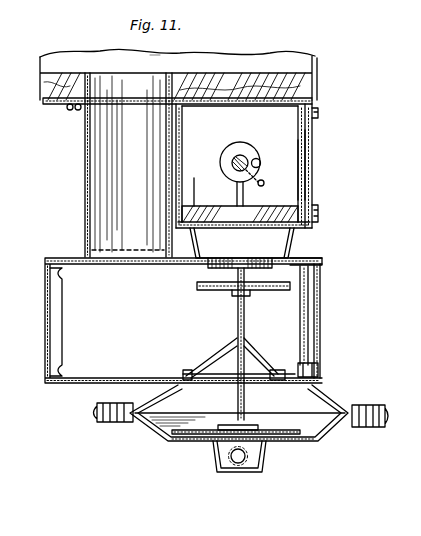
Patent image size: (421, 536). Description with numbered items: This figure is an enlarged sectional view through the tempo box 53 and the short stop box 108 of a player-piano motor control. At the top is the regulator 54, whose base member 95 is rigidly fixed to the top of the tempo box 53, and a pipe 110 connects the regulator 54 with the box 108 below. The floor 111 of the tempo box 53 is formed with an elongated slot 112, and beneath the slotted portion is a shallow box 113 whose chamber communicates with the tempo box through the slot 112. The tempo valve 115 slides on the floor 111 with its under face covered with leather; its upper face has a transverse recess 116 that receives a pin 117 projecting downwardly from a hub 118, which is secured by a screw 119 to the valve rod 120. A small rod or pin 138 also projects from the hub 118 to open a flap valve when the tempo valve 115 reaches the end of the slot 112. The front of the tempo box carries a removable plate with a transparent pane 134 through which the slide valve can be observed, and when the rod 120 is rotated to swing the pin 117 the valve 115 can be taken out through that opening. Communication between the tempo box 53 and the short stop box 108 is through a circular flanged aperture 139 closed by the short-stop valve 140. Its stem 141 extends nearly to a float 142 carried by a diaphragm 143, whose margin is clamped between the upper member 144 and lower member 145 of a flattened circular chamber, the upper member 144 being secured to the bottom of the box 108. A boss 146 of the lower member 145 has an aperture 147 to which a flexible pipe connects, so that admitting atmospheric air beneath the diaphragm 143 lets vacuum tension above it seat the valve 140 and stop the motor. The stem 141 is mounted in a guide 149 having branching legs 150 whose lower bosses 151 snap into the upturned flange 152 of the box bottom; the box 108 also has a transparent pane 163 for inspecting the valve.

The regulator 54 is at (277, 58).
The base member 95 is at (318, 70).
The tempo box 53 is at (313, 127).
The pipe 110 is at (86, 184).
The hub 118 is at (236, 149).
The valve rod 120 is at (247, 159).
The small rod or pin 138 is at (261, 164).
The tempo valve 115 is at (194, 206).
The transverse recess 116 is at (236, 205).
The pin 117 is at (245, 200).
The transparent pane 134 is at (306, 173).
The screw 119 is at (308, 188).
The elongated slot 112 is at (242, 243).
The floor 111 is at (251, 253).
The shallow box 113 is at (297, 245).
The short-stop valve 140 is at (219, 291).
The flanged aperture 139 is at (252, 295).
The guide 149 is at (246, 329).
The transparent pane 163 is at (310, 329).
The stem 141 is at (250, 355).
The branching legs 150 is at (211, 363).
The bosses 151 is at (169, 369).
The upturned flange 152 is at (319, 371).
The upper member 144 is at (338, 398).
The short stop box 108 is at (82, 374).
The float 142 is at (227, 427).
The diaphragm 143 is at (274, 429).
The lower member 145 is at (317, 442).
The boss 146 is at (263, 464).
The aperture 147 is at (237, 461).